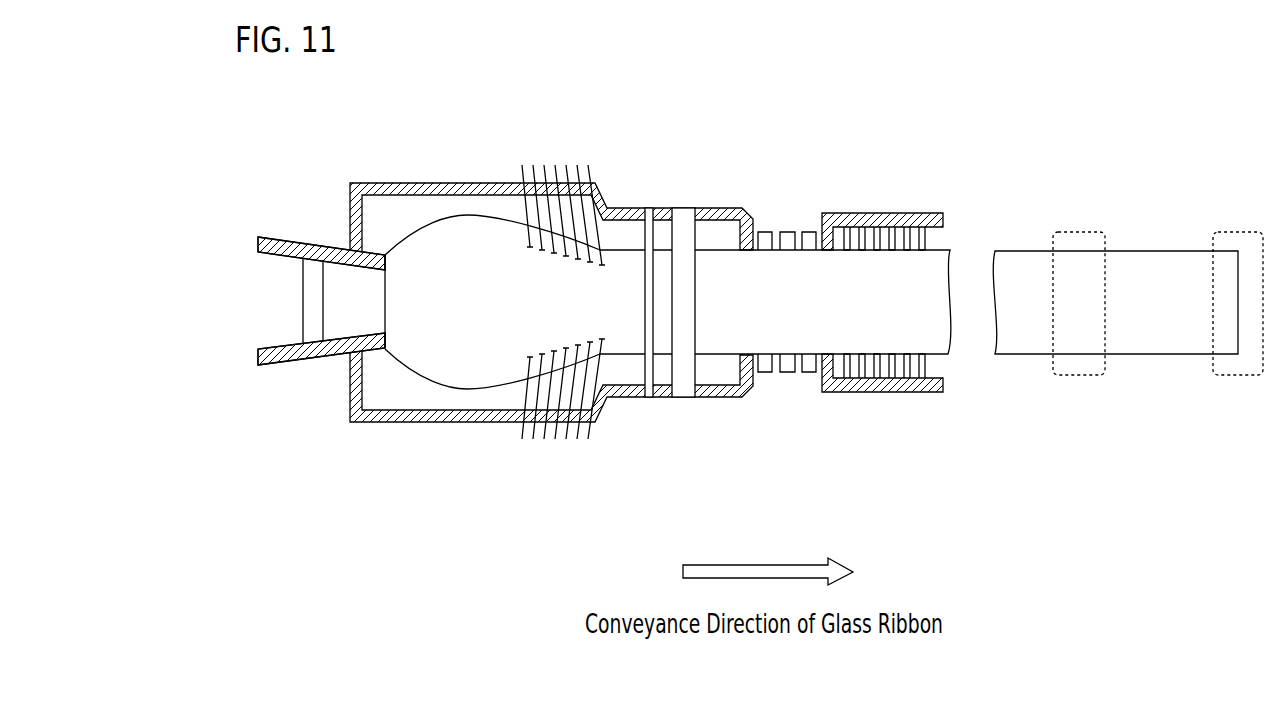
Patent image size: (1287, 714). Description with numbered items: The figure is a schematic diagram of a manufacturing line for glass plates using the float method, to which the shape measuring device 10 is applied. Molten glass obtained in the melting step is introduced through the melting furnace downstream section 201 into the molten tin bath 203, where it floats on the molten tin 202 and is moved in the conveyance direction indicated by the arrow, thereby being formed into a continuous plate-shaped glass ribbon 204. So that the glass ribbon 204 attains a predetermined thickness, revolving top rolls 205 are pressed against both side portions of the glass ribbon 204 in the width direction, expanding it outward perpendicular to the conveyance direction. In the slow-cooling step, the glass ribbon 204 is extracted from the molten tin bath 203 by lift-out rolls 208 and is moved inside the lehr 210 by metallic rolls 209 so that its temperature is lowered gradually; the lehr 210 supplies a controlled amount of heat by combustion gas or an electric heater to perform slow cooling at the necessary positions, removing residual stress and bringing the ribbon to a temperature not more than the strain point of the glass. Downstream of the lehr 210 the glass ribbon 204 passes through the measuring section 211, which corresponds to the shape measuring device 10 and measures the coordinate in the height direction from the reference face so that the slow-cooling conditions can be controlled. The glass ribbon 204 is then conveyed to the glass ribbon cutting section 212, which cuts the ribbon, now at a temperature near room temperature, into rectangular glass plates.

The melting furnace downstream section 201 is at (321, 277).
The molten tin 202 is at (392, 183).
The molten tin bath 203 is at (403, 422).
The glass ribbon 204 is at (786, 330).
The top rolls 205 is at (590, 162).
The lift-out rolls 208 is at (818, 225).
The metallic rolls 209 is at (928, 208).
The lehr 210 is at (885, 392).
The measuring section 211 is at (1078, 232).
The shape measuring device 10 is at (1104, 259).
The glass ribbon cutting section 212 is at (1240, 232).